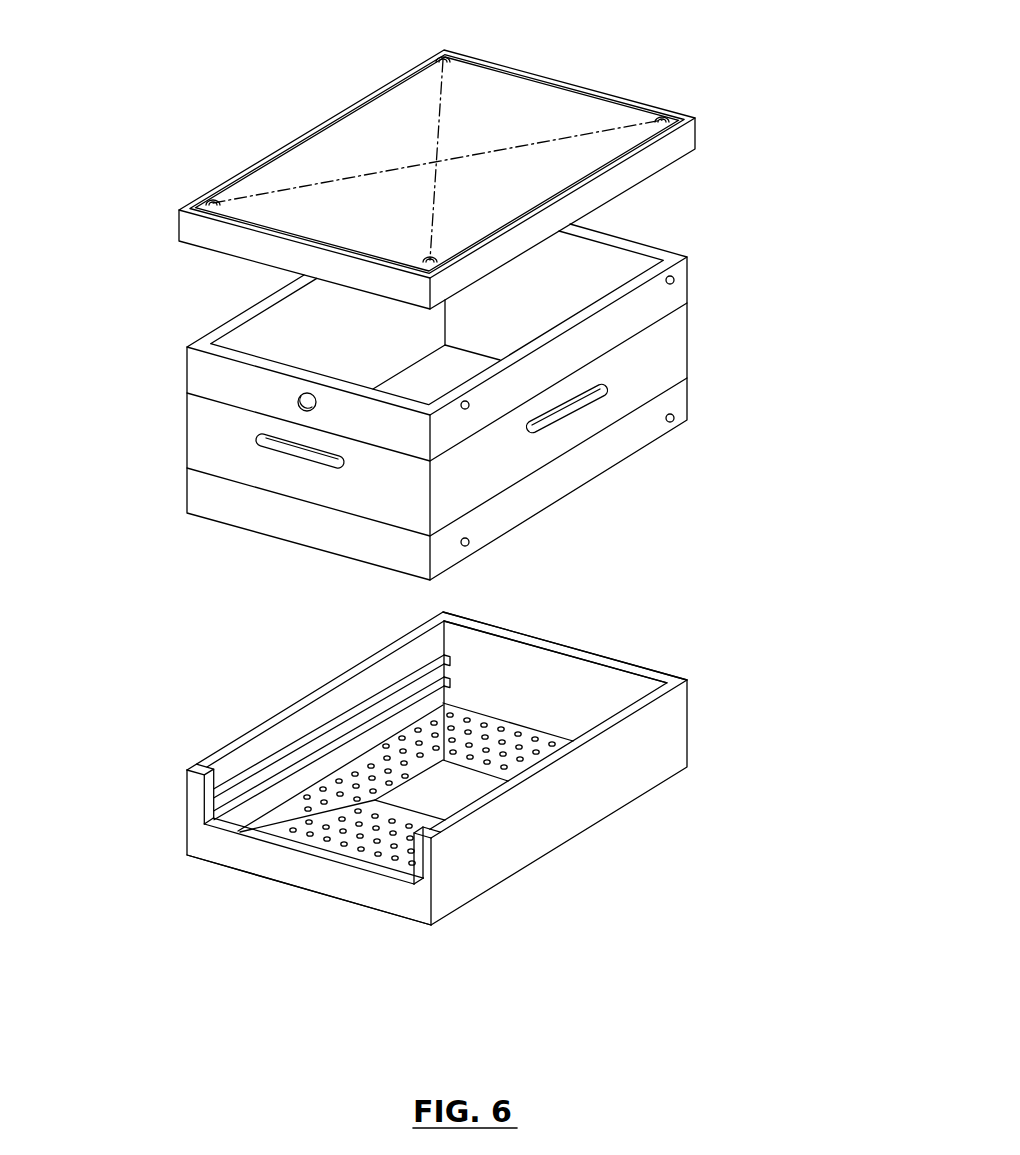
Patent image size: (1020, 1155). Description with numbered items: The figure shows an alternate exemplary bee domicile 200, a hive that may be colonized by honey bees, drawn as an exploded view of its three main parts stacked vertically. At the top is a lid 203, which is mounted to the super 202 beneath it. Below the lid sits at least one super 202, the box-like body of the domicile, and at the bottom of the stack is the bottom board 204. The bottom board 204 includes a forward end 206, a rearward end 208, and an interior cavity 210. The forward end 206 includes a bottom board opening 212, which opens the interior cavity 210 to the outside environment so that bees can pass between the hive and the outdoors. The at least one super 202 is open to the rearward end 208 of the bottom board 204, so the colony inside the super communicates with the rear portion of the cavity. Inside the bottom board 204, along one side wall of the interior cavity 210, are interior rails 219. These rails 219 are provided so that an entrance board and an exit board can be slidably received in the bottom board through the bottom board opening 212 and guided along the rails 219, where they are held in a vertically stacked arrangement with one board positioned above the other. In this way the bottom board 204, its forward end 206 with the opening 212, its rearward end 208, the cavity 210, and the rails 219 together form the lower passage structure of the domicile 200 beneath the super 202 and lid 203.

The bee domicile 200 is at (797, 362).
The super 202 is at (176, 430).
The lid 203 is at (532, 87).
The bottom board 204 is at (498, 872).
The forward end 206 is at (262, 897).
The rearward end 208 is at (612, 650).
The interior cavity 210 is at (468, 799).
The bottom board opening 212 is at (372, 856).
The interior rails 219 is at (350, 716).